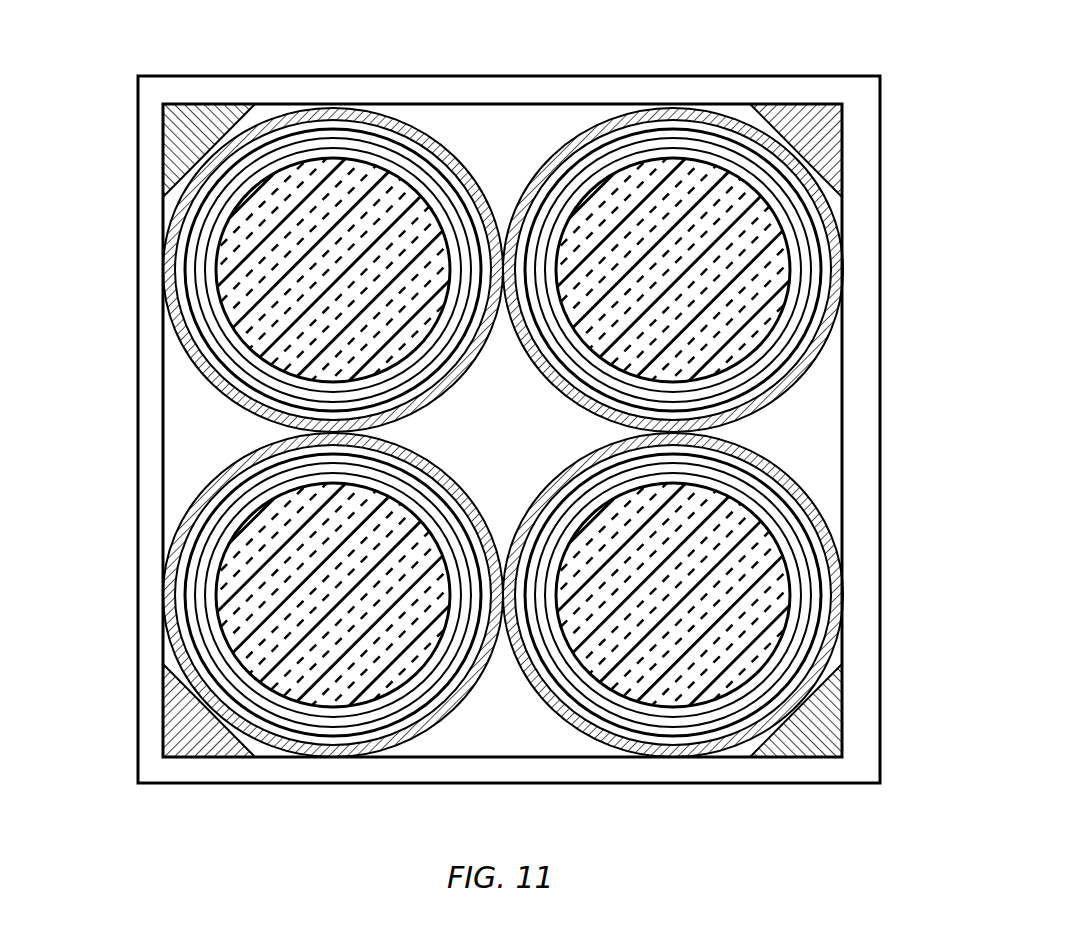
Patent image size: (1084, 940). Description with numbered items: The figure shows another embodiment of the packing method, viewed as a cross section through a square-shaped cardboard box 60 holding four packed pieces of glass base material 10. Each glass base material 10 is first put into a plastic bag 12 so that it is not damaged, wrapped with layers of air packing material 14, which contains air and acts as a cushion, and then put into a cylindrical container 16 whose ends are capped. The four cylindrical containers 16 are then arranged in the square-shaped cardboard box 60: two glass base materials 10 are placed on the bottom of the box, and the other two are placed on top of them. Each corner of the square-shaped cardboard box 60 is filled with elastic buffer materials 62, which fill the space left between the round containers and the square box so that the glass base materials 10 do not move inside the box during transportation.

The glass base material 10 is at (232, 265).
The plastic bag 12 is at (366, 152).
The air packing material 14 is at (317, 130).
The cylindrical container 16 is at (440, 140).
The square-shaped cardboard box 60 is at (687, 75).
The elastic buffer materials 62 is at (202, 104).